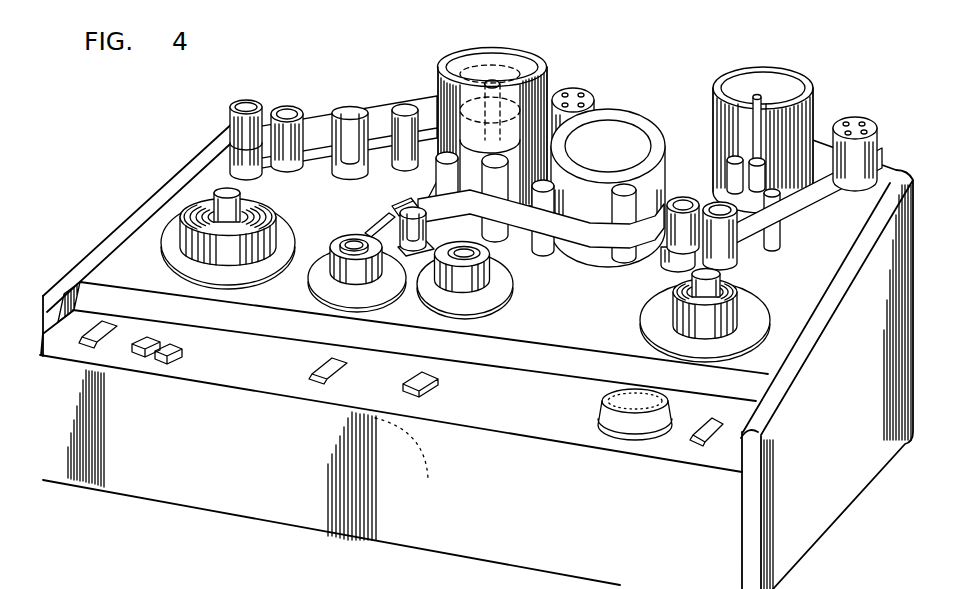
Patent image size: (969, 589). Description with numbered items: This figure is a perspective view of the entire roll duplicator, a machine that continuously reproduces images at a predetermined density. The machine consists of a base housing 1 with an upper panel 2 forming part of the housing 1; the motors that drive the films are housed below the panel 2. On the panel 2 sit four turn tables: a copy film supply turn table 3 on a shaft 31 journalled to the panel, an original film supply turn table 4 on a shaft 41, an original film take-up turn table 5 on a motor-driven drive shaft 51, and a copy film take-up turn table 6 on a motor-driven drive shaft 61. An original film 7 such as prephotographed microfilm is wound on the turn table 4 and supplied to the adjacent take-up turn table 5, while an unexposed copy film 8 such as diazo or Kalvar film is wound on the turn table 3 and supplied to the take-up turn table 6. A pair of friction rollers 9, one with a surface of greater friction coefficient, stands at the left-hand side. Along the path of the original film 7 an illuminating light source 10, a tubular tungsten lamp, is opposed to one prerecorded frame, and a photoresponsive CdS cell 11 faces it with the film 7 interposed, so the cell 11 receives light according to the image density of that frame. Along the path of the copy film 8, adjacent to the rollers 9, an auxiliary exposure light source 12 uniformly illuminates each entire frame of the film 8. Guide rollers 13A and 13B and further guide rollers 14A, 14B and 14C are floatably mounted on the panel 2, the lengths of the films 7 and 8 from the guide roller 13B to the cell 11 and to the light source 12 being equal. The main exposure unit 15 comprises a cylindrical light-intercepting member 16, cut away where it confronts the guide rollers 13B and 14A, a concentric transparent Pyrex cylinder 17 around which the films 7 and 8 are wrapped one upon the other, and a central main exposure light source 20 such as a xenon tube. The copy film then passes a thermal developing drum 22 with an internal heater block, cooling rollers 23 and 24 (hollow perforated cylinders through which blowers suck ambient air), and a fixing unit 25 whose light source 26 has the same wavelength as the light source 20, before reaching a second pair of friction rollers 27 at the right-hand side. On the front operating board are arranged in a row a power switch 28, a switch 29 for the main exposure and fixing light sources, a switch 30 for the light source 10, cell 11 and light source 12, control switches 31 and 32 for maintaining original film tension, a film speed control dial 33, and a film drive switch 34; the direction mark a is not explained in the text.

The base housing 1 is at (133, 479).
The upper panel 2 is at (117, 257).
The copy film supply turn table 3 is at (259, 258).
The shaft 31 is at (217, 193).
The original film supply turn table 4 is at (338, 261).
The shaft 41 is at (341, 240).
The original film take-up turn table 5 is at (481, 291).
The drive shaft 51 is at (487, 271).
The copy film take-up turn table 6 is at (685, 312).
The drive shaft 61 is at (692, 274).
The original film 7 is at (368, 229).
The copy film 8 is at (273, 177).
The friction rollers 9 is at (284, 107).
The illuminating light source 10 is at (414, 257).
The photoresponsive cell 11 is at (393, 207).
The auxiliary exposure light source 12 is at (351, 110).
The guide roller 13A is at (405, 105).
The guide roller 13B is at (438, 229).
The guide roller 14A is at (475, 232).
The guide roller 14B is at (549, 251).
The guide roller 14C is at (622, 258).
The main exposure unit 15 is at (481, 110).
The cylindrical light-intercepting member 16 is at (528, 58).
The transparent cylinder 17 is at (437, 192).
The main exposure light source 20 is at (492, 80).
The thermal developing drum 22 is at (627, 116).
The cooling roller 23 is at (576, 88).
The cooling roller 24 is at (855, 118).
The fixing unit 25 is at (769, 116).
The light source 26 is at (760, 96).
The friction rollers 27 is at (684, 200).
The power switch 28 is at (81, 339).
The switch 29 is at (134, 345).
The switch 30 is at (186, 352).
The control switch 32 is at (402, 386).
The film speed control dial 33 is at (602, 404).
The film drive switch 34 is at (700, 433).
The direction arrow a is at (310, 586).